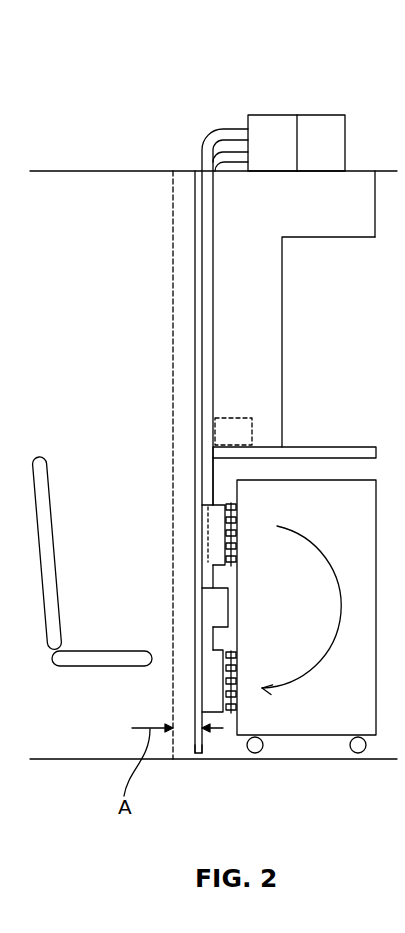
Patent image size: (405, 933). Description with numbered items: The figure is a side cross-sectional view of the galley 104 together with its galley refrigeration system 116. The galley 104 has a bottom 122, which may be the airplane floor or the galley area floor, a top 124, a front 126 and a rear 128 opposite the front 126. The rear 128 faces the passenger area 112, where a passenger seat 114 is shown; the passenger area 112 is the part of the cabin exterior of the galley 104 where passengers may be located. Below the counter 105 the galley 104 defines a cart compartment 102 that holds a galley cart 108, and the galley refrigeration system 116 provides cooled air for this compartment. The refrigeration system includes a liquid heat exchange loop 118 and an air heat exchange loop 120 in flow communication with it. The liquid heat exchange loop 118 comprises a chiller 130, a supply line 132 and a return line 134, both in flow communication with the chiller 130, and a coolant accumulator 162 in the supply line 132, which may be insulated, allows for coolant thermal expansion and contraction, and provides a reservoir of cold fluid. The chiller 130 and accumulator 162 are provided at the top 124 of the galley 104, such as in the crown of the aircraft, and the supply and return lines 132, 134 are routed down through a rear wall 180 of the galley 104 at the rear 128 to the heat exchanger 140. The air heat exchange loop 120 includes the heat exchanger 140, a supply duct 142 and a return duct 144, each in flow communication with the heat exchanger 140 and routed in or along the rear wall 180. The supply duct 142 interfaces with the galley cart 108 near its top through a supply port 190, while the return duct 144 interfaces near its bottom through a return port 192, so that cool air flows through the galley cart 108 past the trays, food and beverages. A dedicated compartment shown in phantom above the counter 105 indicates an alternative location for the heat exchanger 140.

The cart compartment 102 is at (306, 661).
The galley 104 is at (309, 268).
The counter 105 is at (320, 446).
The galley cart 108 is at (323, 716).
The passenger area 112 is at (67, 410).
The passenger seat 114 is at (42, 492).
The galley refrigeration system 116 is at (169, 399).
The liquid heat exchange loop 118 is at (300, 91).
The air heat exchange loop 120 is at (202, 595).
The bottom 122 is at (286, 760).
The top 124 is at (343, 262).
The front 126 is at (375, 198).
The rear 128 is at (155, 478).
The chiller 130 is at (313, 114).
The supply line 132 is at (213, 135).
The return line 134 is at (237, 158).
The heat exchanger 140 is at (210, 611).
The supply duct 142 is at (213, 537).
The return duct 144 is at (212, 682).
The coolant accumulator 162 is at (276, 114).
The rear wall 180 is at (200, 745).
The supply port 190 is at (237, 523).
The return port 192 is at (237, 683).